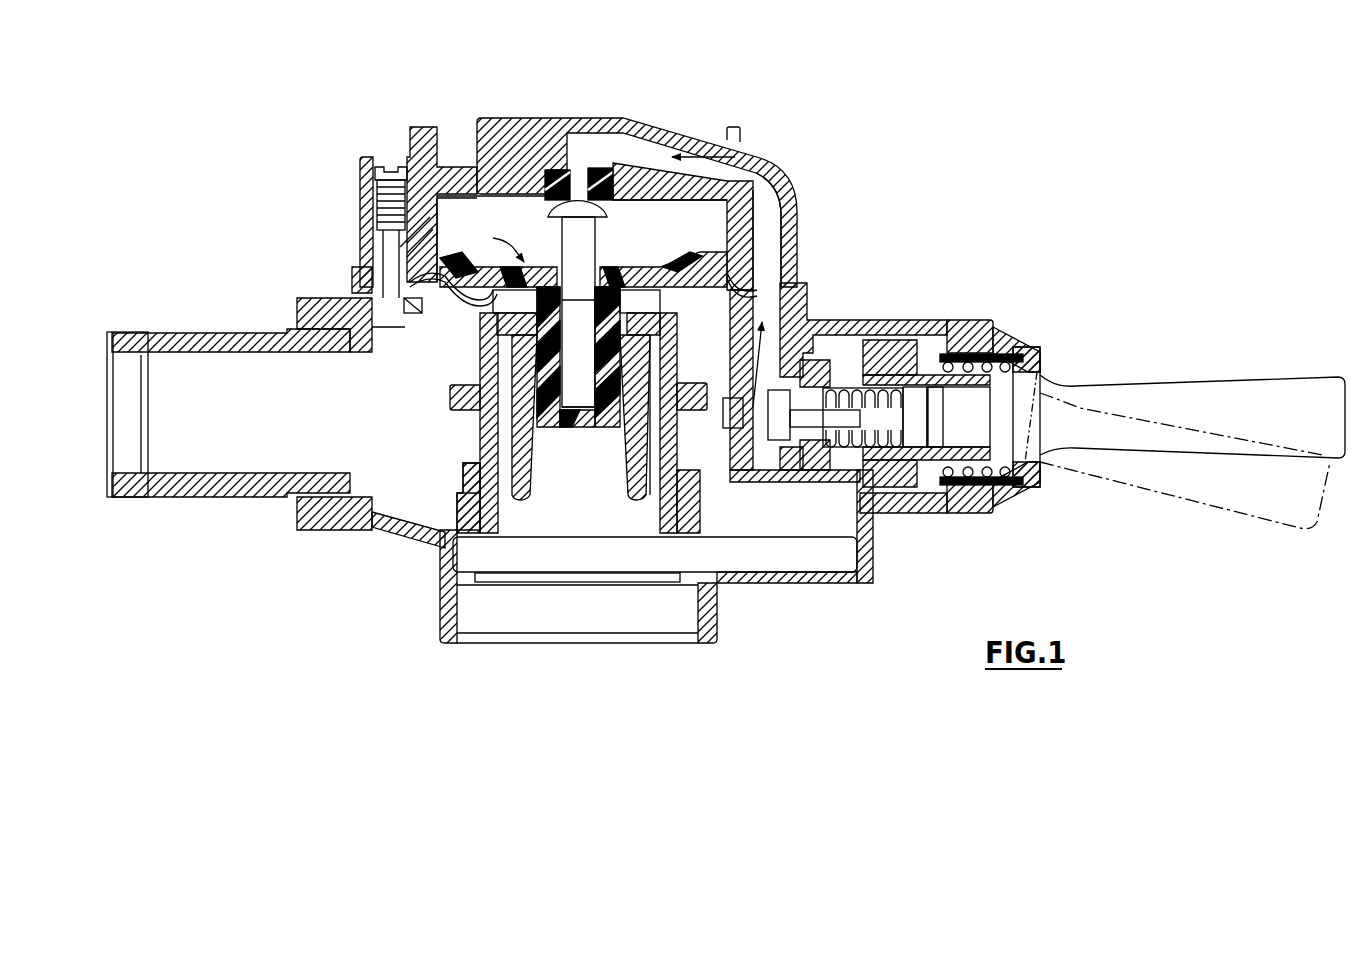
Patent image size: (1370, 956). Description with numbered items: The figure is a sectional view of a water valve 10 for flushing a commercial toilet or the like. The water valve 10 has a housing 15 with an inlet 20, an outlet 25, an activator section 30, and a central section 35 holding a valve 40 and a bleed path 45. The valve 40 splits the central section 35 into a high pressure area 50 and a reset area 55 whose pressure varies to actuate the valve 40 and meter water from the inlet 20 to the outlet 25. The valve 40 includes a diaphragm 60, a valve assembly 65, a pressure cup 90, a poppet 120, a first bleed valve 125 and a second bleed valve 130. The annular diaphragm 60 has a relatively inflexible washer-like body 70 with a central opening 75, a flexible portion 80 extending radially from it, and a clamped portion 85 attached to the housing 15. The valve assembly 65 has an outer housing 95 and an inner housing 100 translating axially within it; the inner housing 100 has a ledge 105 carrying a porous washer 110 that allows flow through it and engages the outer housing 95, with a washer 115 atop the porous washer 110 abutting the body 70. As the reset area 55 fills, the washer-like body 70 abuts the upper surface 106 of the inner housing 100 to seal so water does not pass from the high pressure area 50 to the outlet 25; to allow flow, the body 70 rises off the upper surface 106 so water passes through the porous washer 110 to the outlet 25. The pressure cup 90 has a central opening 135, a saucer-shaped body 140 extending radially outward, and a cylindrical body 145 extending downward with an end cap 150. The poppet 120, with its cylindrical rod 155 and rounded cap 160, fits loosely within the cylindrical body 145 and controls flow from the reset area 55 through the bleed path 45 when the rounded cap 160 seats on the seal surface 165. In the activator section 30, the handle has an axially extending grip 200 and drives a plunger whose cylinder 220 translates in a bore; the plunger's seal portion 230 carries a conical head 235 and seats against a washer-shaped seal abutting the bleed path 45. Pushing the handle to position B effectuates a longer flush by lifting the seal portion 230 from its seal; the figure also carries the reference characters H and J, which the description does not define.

The water valve 10 is at (412, 708).
The housing 15 is at (585, 307).
The inlet 20 is at (201, 413).
The outlet 25 is at (578, 607).
The activator section 30 is at (904, 382).
The central section 35 is at (637, 166).
The valve 40 is at (577, 539).
The bleed path 45 is at (794, 183).
The high pressure area 50 is at (530, 398).
The reset area 55 is at (582, 223).
The diaphragm 60 is at (571, 309).
The valve assembly 65 is at (530, 361).
The washer-like body 70 is at (498, 260).
The central opening 75 is at (663, 263).
The flexible portion 80 is at (802, 251).
The clamped portion 85 is at (793, 240).
The pressure cup 90 is at (552, 228).
The outer housing 95 is at (466, 423).
The inner housing 100 is at (581, 417).
The ledge 105 is at (689, 423).
The upper surface 106 is at (484, 331).
The porous washer 110 is at (677, 312).
The washer 115 is at (420, 342).
The poppet 120 is at (603, 310).
The first bleed valve 125 is at (368, 235).
The second bleed valve 130 is at (767, 461).
The central opening 135 is at (496, 200).
The saucer-shaped body 140 is at (454, 240).
The cylindrical body 145 is at (578, 371).
The end cap 150 is at (604, 433).
The cylindrical rod 155 is at (679, 415).
The rounded cap 160 is at (678, 226).
The seal surface 165 is at (579, 139).
The grip 200 is at (1192, 434).
The cylinder 220 is at (963, 454).
The seal portion 230 is at (905, 385).
The conical head 235 is at (858, 349).
The flow direction H is at (684, 148).
The handle position B is at (501, 236).
The flow direction J is at (578, 278).